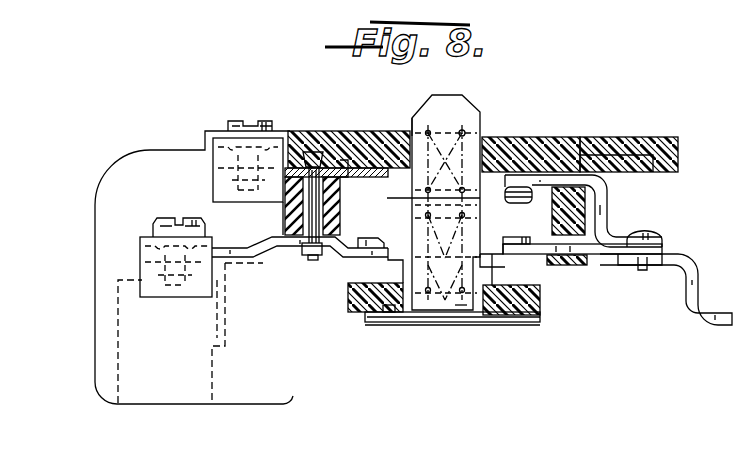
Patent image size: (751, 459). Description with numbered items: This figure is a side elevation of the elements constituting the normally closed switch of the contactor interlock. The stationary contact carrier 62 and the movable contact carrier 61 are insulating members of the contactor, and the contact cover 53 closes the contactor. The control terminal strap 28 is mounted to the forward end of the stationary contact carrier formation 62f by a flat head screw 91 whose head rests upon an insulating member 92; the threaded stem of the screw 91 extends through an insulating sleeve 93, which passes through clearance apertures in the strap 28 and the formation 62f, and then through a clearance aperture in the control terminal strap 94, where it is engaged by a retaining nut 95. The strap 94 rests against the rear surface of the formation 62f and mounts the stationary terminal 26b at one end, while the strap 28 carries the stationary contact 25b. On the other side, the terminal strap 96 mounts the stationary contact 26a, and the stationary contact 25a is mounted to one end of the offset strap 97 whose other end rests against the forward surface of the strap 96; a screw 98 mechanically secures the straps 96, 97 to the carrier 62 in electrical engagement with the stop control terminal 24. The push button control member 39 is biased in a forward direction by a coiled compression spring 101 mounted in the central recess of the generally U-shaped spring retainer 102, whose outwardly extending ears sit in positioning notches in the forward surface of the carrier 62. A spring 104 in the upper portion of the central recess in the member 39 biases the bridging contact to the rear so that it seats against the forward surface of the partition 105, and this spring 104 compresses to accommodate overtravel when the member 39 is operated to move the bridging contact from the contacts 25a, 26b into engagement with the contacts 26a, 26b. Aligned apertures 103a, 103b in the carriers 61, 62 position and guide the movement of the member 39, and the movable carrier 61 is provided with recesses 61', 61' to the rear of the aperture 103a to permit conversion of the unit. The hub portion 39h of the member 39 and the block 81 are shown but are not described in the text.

The stationary contact carrier 62 is at (148, 150).
The stationary contact carrier formation 62f is at (284, 221).
The control terminal strap 28 is at (290, 152).
The flat head screw 91 is at (322, 151).
The insulating member 92 is at (338, 152).
The stationary contact 25b is at (393, 141).
The stationary contact 25a is at (522, 162).
The push button control member 39 is at (463, 99).
The spindle hub 39h is at (412, 131).
The spring 104 is at (467, 140).
The partition 105 is at (478, 207).
The contact cover 53 is at (623, 125).
The offset strap 97 is at (608, 197).
The screw 98 is at (657, 235).
The stationary contact 26a is at (522, 250).
The terminal strap 96 is at (604, 256).
The stop control terminal 24 is at (699, 293).
The control terminal strap 94 is at (247, 252).
The insulating sleeve 93 is at (286, 244).
The stationary terminal 26b is at (379, 236).
The retaining nut 95 is at (325, 250).
The aperture 103b is at (400, 274).
The insulating block 81 is at (368, 319).
The movable contact carrier 61 is at (463, 314).
The recesses 61' is at (450, 332).
The aperture 103a is at (403, 330).
The coiled compression spring 101 is at (426, 292).
The spring retainer 102 is at (460, 323).